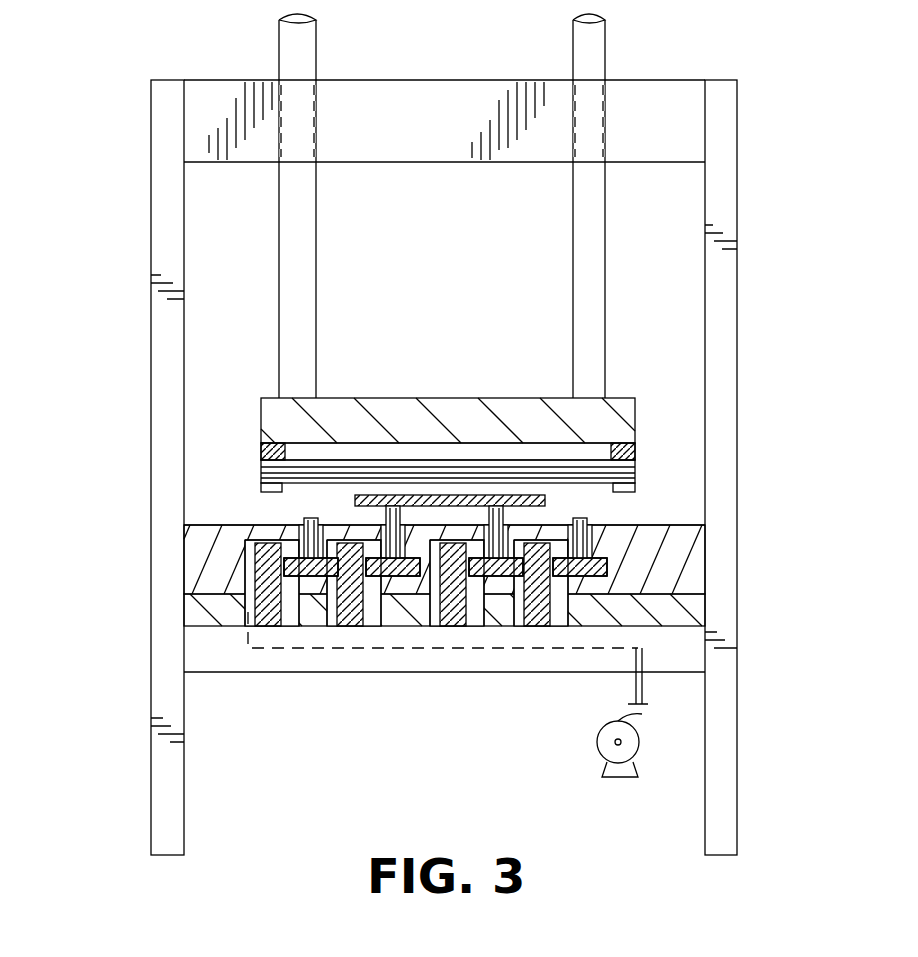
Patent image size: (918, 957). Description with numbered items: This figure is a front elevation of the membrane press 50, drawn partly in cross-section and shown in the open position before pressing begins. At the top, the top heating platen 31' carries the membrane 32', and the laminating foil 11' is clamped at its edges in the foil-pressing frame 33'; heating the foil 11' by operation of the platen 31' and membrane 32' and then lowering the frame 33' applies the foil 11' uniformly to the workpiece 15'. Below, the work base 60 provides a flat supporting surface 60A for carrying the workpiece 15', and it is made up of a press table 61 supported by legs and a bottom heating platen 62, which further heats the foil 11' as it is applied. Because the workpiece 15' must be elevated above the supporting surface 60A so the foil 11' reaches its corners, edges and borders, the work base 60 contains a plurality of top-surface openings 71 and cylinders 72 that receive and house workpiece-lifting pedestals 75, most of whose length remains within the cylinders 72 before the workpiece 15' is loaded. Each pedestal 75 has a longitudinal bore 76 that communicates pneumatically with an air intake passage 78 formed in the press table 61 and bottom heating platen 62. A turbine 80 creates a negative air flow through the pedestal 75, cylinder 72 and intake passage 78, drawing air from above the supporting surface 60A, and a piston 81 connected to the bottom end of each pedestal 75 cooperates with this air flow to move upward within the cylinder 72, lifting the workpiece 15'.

The membrane press 50 is at (88, 92).
The top heating platen 31' is at (473, 395).
The membrane 32' is at (424, 399).
The laminating foil 11' is at (416, 435).
The foil-pressing frame 33' is at (529, 465).
The workpiece 15' is at (482, 507).
The work base 60 is at (137, 858).
The supporting surface 60A is at (700, 527).
The press table 61 is at (222, 605).
The bottom heating platen 62 is at (192, 600).
The top-surface openings 71 is at (640, 506).
The cylinders 72 is at (287, 627).
The workpiece-lifting pedestals 75 is at (484, 556).
The longitudinal bore 76 is at (312, 627).
The air intake passage 78 is at (560, 627).
The turbine 80 is at (633, 748).
The piston 81 is at (660, 684).